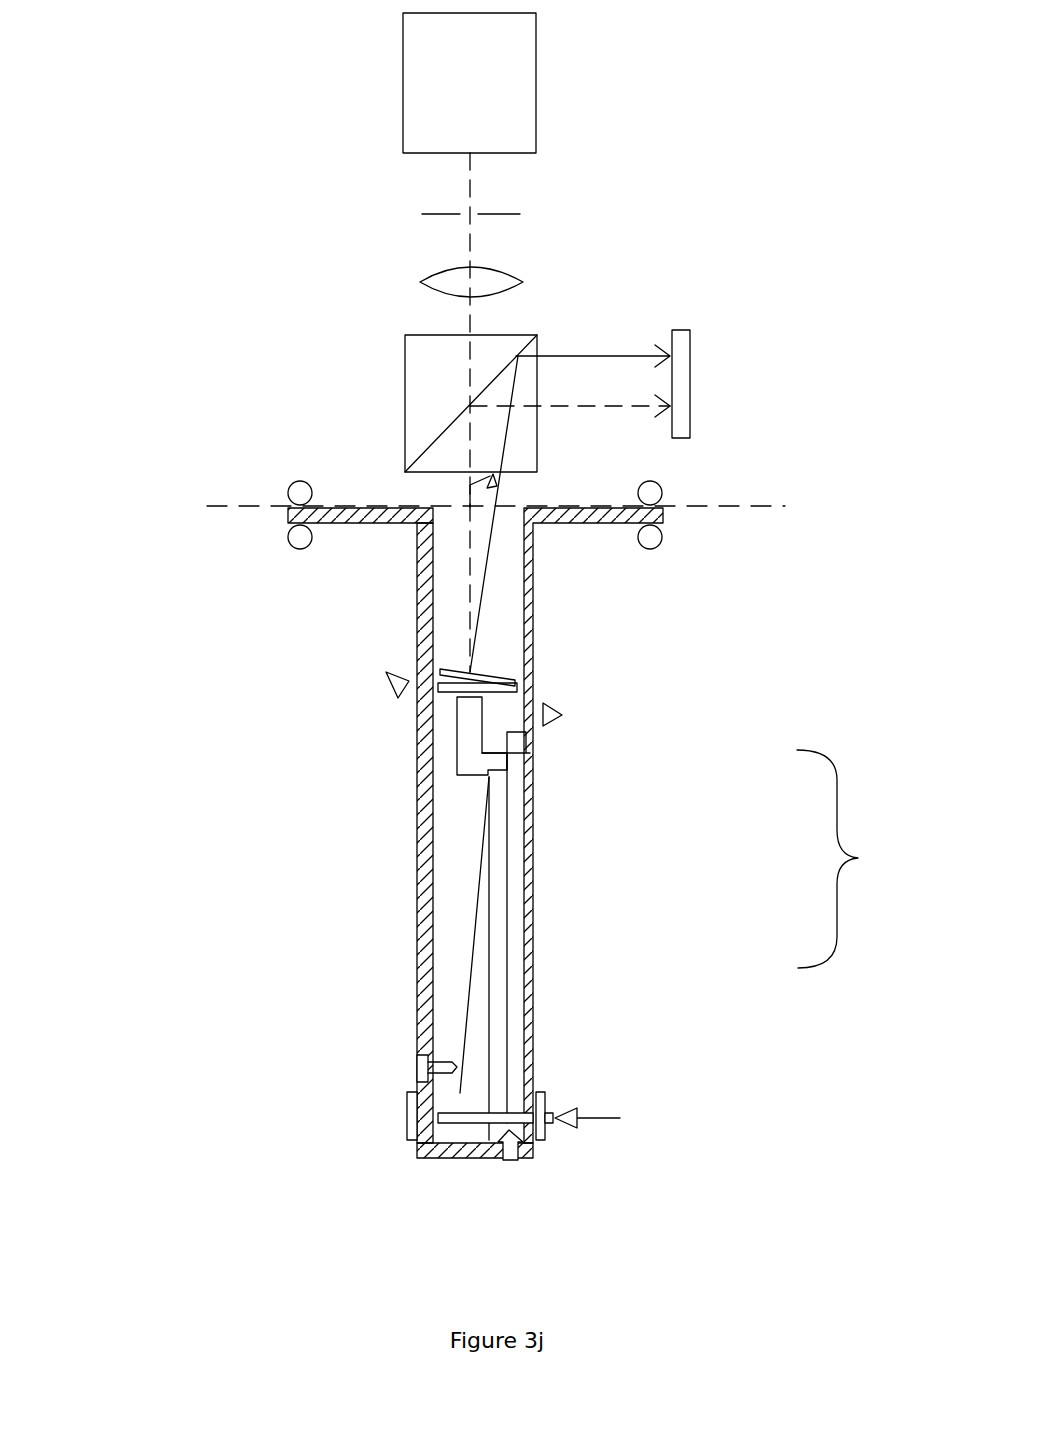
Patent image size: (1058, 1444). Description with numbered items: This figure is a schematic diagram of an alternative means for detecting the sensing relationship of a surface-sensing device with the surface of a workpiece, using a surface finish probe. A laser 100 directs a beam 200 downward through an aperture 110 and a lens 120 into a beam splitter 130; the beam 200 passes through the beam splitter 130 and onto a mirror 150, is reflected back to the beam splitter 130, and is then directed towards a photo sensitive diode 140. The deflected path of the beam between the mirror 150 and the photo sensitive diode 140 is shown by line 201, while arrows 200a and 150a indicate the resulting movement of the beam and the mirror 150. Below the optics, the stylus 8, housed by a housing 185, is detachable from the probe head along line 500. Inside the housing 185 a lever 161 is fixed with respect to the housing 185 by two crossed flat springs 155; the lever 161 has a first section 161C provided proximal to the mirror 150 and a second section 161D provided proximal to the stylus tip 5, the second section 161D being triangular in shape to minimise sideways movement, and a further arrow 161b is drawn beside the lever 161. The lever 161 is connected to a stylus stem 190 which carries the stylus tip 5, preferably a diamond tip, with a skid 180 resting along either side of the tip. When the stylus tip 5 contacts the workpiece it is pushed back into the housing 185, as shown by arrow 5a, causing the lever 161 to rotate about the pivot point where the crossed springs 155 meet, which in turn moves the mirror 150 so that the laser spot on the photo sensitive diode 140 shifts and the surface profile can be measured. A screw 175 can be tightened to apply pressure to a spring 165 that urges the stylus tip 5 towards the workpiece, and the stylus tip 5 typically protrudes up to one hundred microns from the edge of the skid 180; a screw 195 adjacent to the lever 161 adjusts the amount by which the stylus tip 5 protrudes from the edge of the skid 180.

The laser 100 is at (430, 65).
The beam 200 is at (474, 184).
The aperture 110 is at (412, 212).
The lens 120 is at (410, 272).
The beam splitter 130 is at (405, 383).
The photo sensitive diode 140 is at (690, 413).
The line 500 is at (228, 505).
The stylus 8 is at (399, 819).
The housing 185 is at (415, 968).
The line 201 is at (495, 533).
The arrow 200a is at (477, 487).
The mirror 150 is at (512, 680).
The arrow 150a is at (392, 686).
The crossed flat springs 155 is at (478, 748).
The adjustment direction 161b is at (482, 735).
The first section 161C is at (463, 755).
The second section 161D is at (500, 955).
The lever 161 is at (850, 859).
The spring 165 is at (475, 903).
The screw 175 is at (417, 1072).
The stylus stem 190 is at (460, 1118).
The skid 180 is at (542, 1092).
The stylus tip 5 is at (553, 1112).
The arrow 5a is at (620, 1120).
The screw 195 is at (510, 1163).